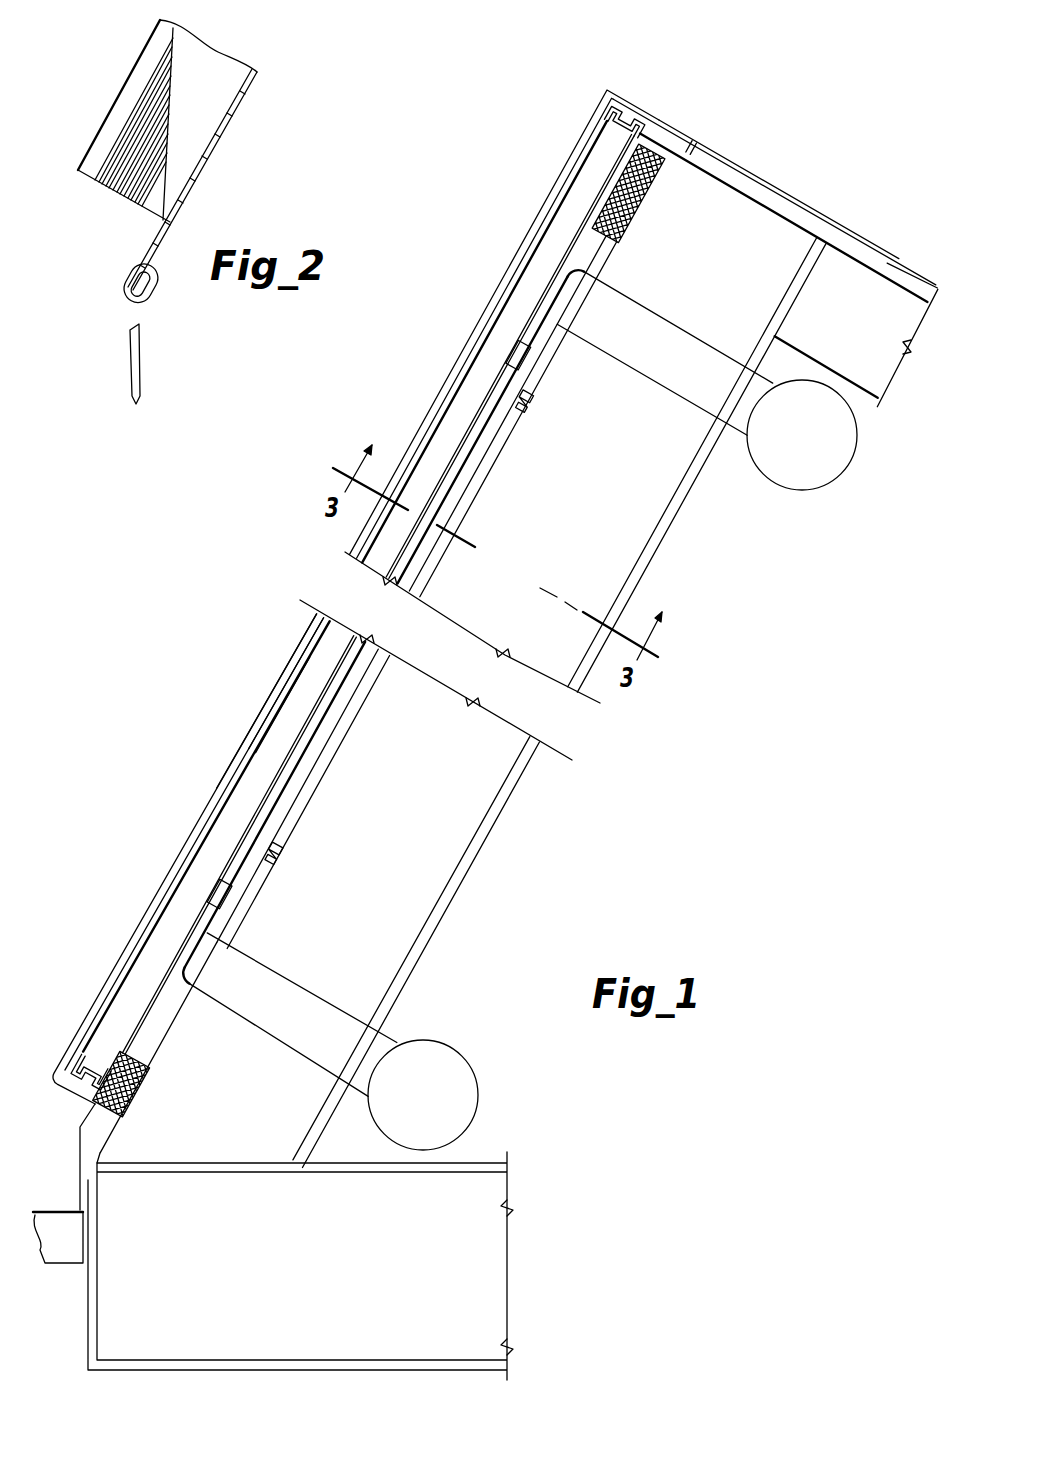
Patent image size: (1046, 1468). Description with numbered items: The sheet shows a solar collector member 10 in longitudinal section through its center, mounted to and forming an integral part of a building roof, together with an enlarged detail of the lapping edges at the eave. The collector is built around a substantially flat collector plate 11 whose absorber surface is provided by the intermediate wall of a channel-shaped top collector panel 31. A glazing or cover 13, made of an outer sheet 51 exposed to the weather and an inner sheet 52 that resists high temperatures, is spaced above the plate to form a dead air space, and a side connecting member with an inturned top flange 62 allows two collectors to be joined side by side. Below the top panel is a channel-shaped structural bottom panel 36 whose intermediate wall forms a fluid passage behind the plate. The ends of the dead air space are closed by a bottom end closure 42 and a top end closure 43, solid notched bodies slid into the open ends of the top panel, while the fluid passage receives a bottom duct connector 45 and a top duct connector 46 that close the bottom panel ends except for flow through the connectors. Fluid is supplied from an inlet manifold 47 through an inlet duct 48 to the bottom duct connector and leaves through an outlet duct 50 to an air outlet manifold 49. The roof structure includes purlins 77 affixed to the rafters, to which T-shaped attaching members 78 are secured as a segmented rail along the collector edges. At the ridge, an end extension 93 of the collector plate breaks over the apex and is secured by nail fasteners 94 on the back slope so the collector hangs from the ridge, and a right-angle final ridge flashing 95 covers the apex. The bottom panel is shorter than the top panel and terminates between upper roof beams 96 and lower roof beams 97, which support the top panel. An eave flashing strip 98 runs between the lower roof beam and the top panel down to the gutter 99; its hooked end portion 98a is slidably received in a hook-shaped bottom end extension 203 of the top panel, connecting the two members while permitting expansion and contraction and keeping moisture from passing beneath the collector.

In FIG. 1, the solar collector member 10 is at (155, 808).
In FIG. 1, the collector plate 11 is at (127, 1028).
In FIG. 1, the glazing or cover 13 is at (222, 770).
In FIG. 2, the top collector panel 31 is at (235, 57).
In FIG. 1, the top collector panel 31 is at (177, 932).
In FIG. 1, the structural bottom panel 36 is at (205, 888).
In FIG. 1, the bottom end closure 42 is at (62, 1084).
In FIG. 1, the top end closure 43 is at (620, 112).
In FIG. 1, the bottom duct connector 45 is at (177, 990).
In FIG. 1, the top duct connector 46 is at (595, 265).
In FIG. 1, the inlet manifold 47 is at (461, 1045).
In FIG. 1, the inlet duct 48 is at (330, 1000).
In FIG. 1, the air outlet manifold 49 is at (757, 485).
In FIG. 1, the outlet duct 50 is at (693, 392).
In FIG. 1, the outer sheet 51 is at (312, 657).
In FIG. 1, the inner sheet 52 is at (287, 706).
In FIG. 1, the inturned top flange 62 is at (286, 663).
In FIG. 1, the purlin 77 is at (283, 846).
In FIG. 1, the T-shaped attaching member 78 is at (440, 500).
In FIG. 1, the end extension 93 is at (664, 120).
In FIG. 1, the nail fasteners 94 is at (695, 145).
In FIG. 1, the final ridge flashing 95 is at (575, 135).
In FIG. 1, the upper roof beams 96 is at (640, 208).
In FIG. 1, the lower roof beams 97 is at (143, 1080).
In FIG. 2, the eave flashing strip 98 is at (137, 375).
In FIG. 1, the eave flashing strip 98 is at (103, 1153).
In FIG. 2, the hooked end portion 98a is at (158, 265).
In FIG. 1, the gutter 99 is at (67, 1258).
In FIG. 2, the bottom end extension 203 is at (155, 290).